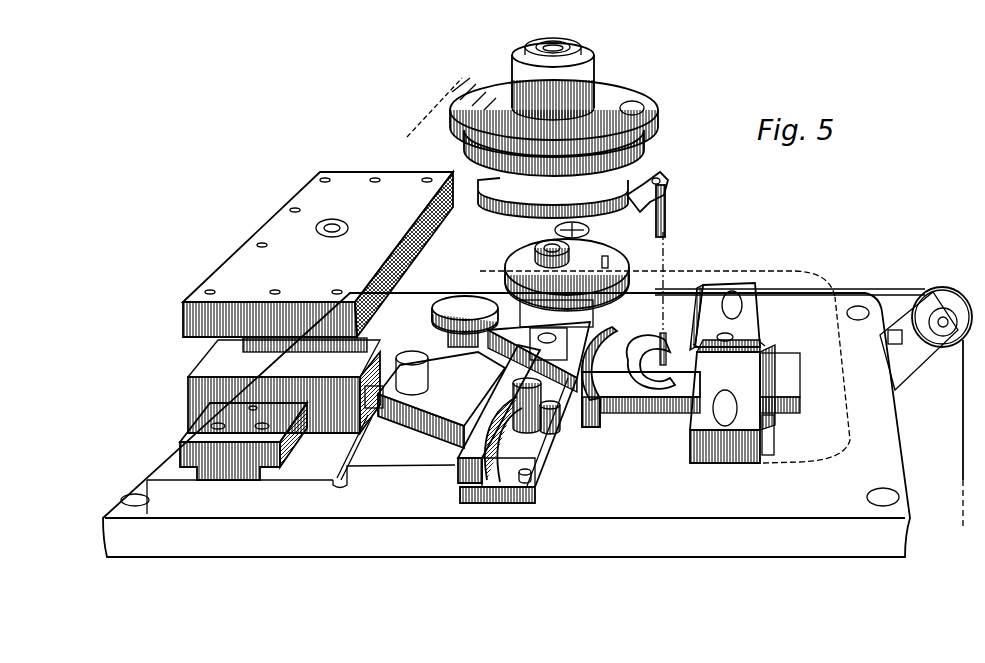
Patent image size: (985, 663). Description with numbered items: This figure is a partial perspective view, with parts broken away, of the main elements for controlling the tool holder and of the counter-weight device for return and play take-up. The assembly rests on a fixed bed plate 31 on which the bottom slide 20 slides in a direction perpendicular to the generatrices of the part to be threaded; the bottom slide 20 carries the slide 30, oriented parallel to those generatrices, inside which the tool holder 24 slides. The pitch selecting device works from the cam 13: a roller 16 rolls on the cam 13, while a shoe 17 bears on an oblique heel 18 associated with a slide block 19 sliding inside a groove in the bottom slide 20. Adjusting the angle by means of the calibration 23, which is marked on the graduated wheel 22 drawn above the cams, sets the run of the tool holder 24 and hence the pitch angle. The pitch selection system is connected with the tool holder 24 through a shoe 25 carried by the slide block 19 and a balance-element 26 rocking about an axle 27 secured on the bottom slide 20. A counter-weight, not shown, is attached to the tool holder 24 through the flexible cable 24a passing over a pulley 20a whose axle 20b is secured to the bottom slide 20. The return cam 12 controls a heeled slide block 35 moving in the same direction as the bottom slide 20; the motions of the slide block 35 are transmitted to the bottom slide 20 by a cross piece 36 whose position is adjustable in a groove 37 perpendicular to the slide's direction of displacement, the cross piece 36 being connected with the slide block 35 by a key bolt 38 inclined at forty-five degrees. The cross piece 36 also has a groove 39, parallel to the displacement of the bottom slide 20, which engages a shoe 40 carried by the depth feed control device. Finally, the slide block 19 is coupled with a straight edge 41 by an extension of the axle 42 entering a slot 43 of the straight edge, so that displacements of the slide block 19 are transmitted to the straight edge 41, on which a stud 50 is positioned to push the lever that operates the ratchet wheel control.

The return cam 12 is at (620, 182).
The cam 13 is at (627, 258).
The roller 16 is at (664, 215).
The shoe 17 is at (577, 345).
The oblique heel 18 is at (497, 345).
The slide block 19 is at (472, 450).
The bottom slide 20 is at (175, 500).
The pulley 20a is at (466, 298).
The axle 20b is at (483, 284).
The gear wheel 22 is at (615, 88).
The calibration 23 is at (456, 93).
The tool holder 24 is at (345, 183).
The flexible cable 24a is at (872, 288).
The shoe 25 is at (553, 437).
The balance-element 26 is at (405, 455).
The axle 27 is at (423, 392).
The slide 30 is at (185, 455).
The fixed bed plate 31 is at (212, 537).
The heeled slide block 35 is at (607, 387).
The cross piece 36 is at (717, 285).
The groove 37 is at (768, 442).
The key bolt 38 is at (693, 344).
The groove 39 is at (760, 342).
The shoe 40 is at (735, 333).
The straight edge 41 is at (458, 492).
The axle 42 is at (540, 450).
The slot 43 is at (545, 443).
The stud 50 is at (532, 477).